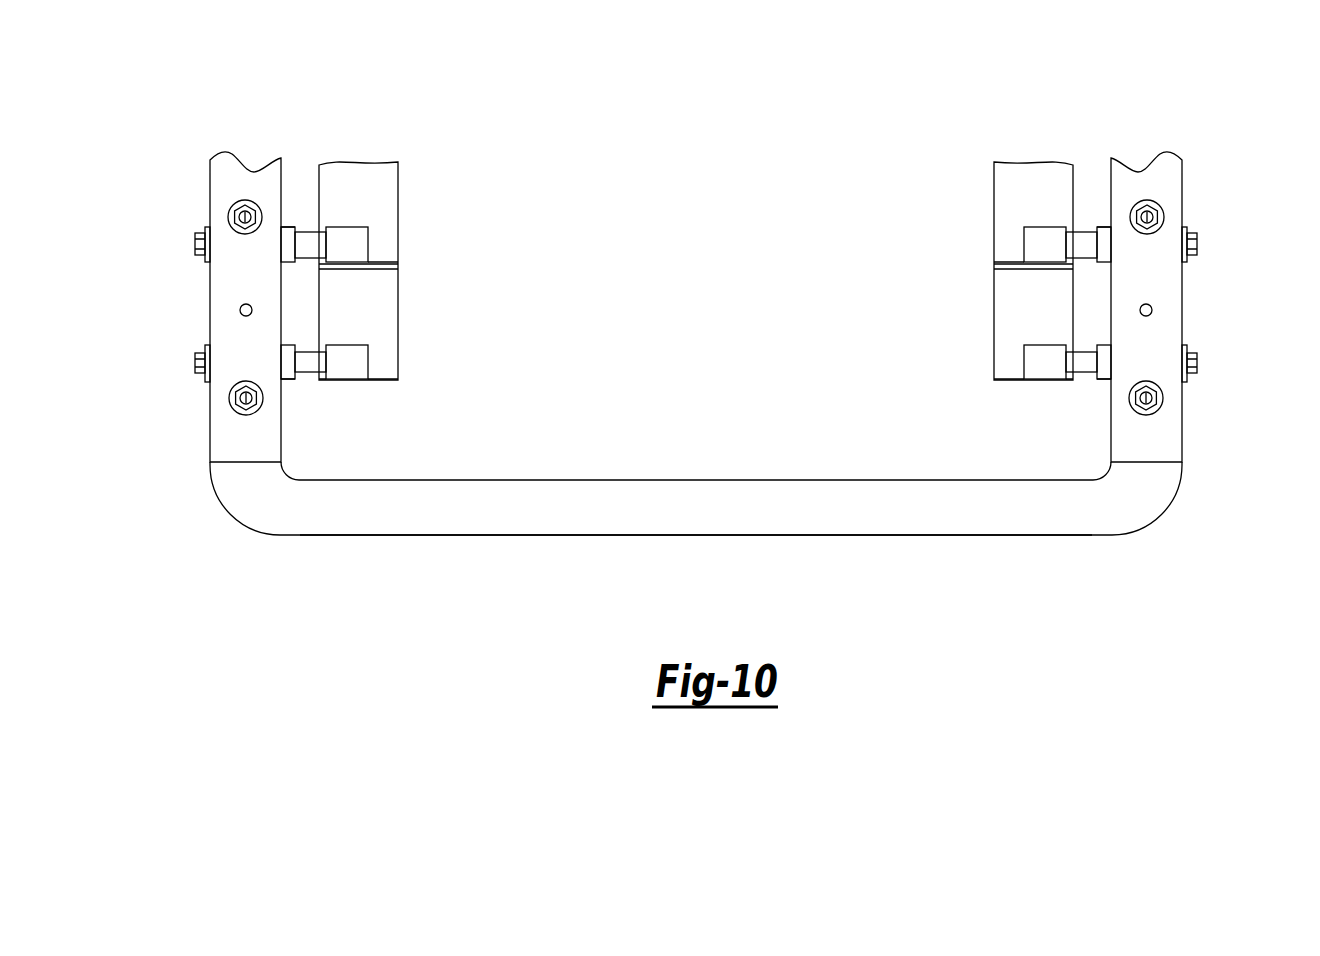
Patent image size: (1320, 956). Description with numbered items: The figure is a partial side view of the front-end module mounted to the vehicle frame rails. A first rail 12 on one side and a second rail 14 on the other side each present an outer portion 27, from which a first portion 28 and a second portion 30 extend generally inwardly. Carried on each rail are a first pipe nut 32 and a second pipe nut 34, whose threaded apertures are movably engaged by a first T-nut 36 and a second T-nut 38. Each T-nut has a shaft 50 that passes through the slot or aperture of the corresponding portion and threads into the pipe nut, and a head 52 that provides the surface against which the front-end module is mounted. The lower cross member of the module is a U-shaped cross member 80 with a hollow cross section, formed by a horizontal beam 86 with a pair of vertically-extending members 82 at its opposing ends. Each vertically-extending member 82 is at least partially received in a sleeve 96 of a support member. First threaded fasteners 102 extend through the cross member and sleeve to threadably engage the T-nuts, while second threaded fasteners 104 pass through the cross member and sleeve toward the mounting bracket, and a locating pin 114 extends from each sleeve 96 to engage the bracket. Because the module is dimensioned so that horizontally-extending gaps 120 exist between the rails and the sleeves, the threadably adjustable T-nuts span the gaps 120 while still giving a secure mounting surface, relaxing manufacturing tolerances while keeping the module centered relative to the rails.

The first rail 12 is at (403, 192).
The second rail 14 is at (989, 192).
The outer portion 27 is at (320, 290).
The first portion 28 is at (385, 262).
The second portion 30 is at (370, 381).
The first pipe nut 32 is at (340, 227).
The second pipe nut 34 is at (360, 365).
The first T-nut 36 is at (297, 222).
The second T-nut 38 is at (291, 387).
The shaft 50 is at (310, 354).
The head 52 is at (287, 263).
The U-shaped cross member 80 is at (776, 540).
The vertically-extending member 82 is at (222, 470).
The horizontal beam 86 is at (722, 536).
The sleeve 96 is at (224, 162).
The first threaded fastener 102 is at (192, 244).
The second threaded fastener 104 is at (245, 217).
The locating pin 114 is at (240, 310).
The horizontally-extending gap 120 is at (313, 222).